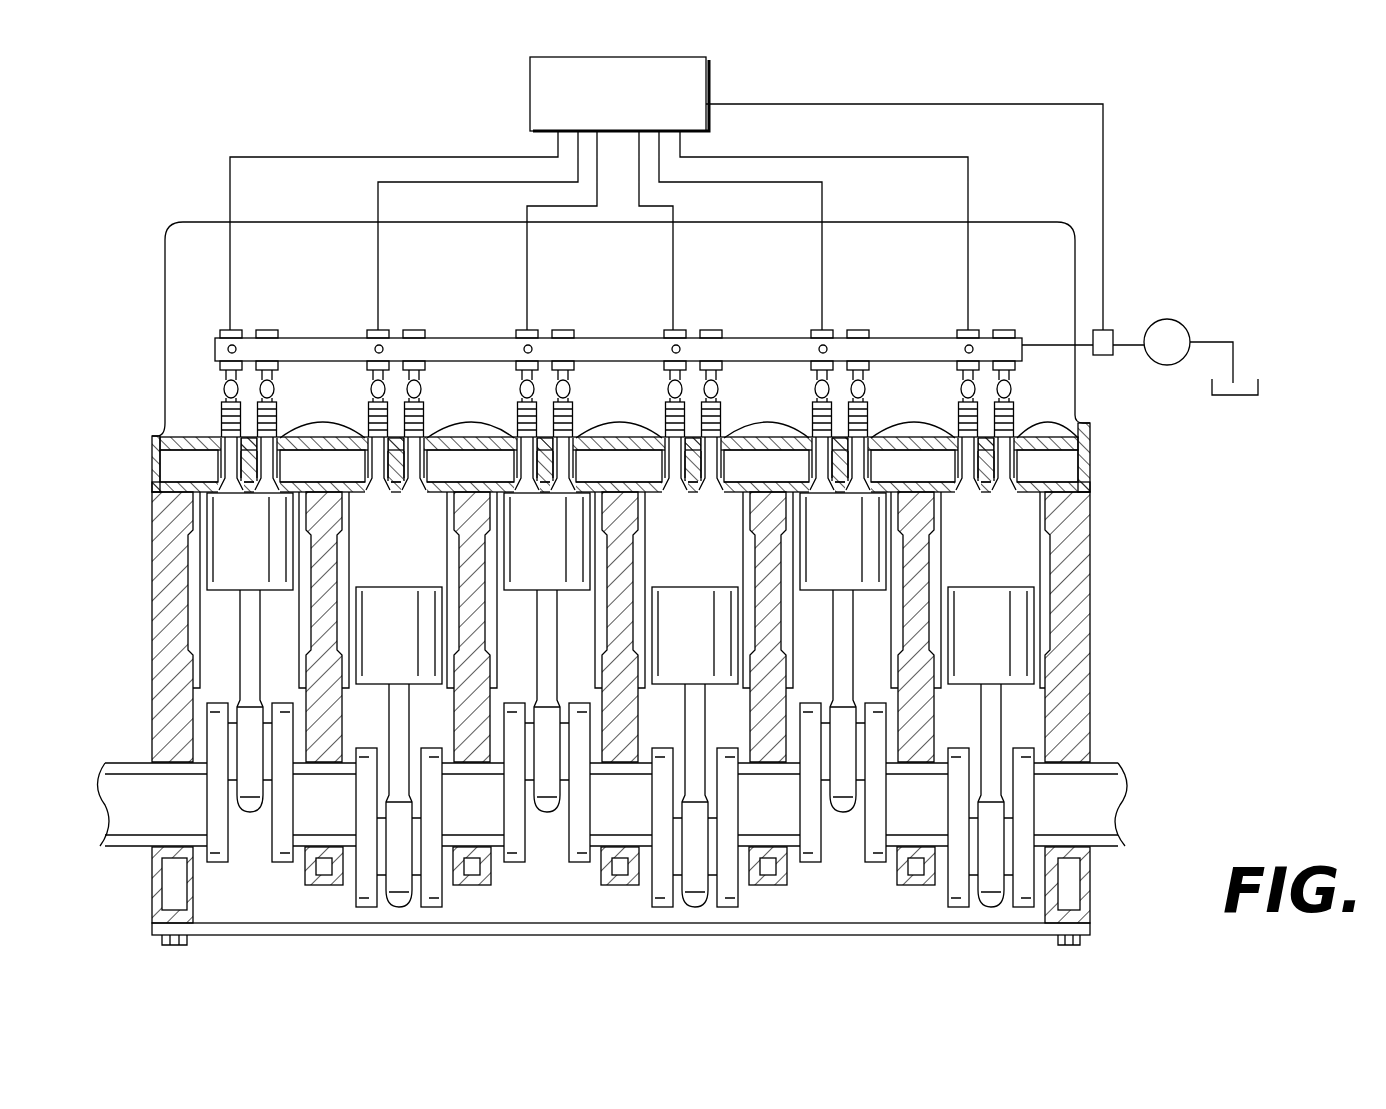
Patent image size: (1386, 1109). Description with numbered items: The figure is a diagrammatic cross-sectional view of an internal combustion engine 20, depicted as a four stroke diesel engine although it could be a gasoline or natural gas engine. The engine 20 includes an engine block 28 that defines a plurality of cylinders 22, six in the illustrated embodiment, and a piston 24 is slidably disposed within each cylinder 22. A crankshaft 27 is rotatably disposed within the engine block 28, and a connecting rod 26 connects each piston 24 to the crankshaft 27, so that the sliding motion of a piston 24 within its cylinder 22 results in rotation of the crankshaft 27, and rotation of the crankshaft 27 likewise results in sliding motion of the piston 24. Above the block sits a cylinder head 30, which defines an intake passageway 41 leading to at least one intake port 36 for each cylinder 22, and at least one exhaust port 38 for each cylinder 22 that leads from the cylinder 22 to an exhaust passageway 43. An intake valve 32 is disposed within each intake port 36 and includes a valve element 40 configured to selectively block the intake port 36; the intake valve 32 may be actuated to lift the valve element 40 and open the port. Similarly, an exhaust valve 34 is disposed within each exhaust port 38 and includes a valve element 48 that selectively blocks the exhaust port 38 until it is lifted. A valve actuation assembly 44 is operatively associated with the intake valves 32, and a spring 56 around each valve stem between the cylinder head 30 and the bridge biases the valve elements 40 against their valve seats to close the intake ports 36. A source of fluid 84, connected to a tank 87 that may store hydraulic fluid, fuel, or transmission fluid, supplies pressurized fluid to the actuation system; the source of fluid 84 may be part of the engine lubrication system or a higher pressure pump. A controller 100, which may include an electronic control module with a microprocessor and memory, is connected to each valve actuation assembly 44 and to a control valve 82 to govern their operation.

The internal combustion engine 20 is at (1140, 212).
The cylinder 22 is at (260, 657).
The piston 24 is at (233, 578).
The connecting rod 26 is at (245, 673).
The crankshaft 27 is at (130, 812).
The engine block 28 is at (160, 508).
The cylinder head 30 is at (1090, 463).
The intake valve 32 is at (323, 423).
The exhaust valve 34 is at (220, 436).
The intake port 36 is at (290, 500).
The exhaust port 38 is at (248, 506).
The valve element 40 is at (286, 500).
The intake passageway 41 is at (304, 478).
The exhaust passageway 43 is at (454, 478).
The valve actuation assembly 44 is at (265, 330).
The valve element 48 is at (172, 460).
The spring 56 is at (220, 366).
The control valve 82 is at (1113, 355).
The source of fluid 84 is at (1170, 320).
The tank 87 is at (1257, 388).
The controller 100 is at (596, 106).